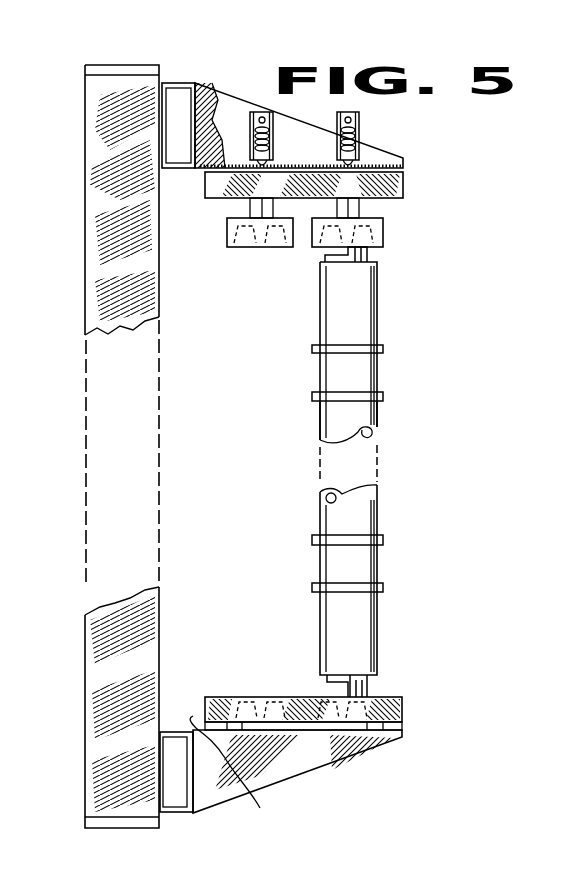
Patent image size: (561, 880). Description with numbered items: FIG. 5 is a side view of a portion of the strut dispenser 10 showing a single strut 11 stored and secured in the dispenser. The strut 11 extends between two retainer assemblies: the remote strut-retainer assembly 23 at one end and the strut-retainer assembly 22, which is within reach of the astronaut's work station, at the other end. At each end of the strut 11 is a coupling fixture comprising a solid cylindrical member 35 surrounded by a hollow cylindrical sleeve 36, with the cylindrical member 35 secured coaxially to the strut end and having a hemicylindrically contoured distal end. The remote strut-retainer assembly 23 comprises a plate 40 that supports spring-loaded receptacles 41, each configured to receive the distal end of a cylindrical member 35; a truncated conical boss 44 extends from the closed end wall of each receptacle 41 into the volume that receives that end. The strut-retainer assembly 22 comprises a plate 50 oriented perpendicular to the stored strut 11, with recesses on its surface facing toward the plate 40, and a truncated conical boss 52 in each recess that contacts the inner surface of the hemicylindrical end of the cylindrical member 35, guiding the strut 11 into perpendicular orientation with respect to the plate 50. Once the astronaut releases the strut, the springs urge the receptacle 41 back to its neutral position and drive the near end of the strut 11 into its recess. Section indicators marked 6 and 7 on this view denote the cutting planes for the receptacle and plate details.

The strut dispenser 10 is at (159, 610).
The strut 11 is at (345, 417).
The strut-retainer assembly 22 is at (348, 769).
The remote strut-retainer assembly 23 is at (396, 148).
The cylindrical member 35 is at (325, 258).
The cylindrical sleeve 36 is at (350, 320).
The plate 40 is at (205, 193).
The receptacle 41 is at (216, 247).
The truncated conical boss 44 is at (253, 245).
The plate 50 is at (244, 770).
The truncated conical boss 52 is at (257, 710).
The section line of FIG. 6 is at (428, 217).
The section line of FIG. 7 is at (278, 615).